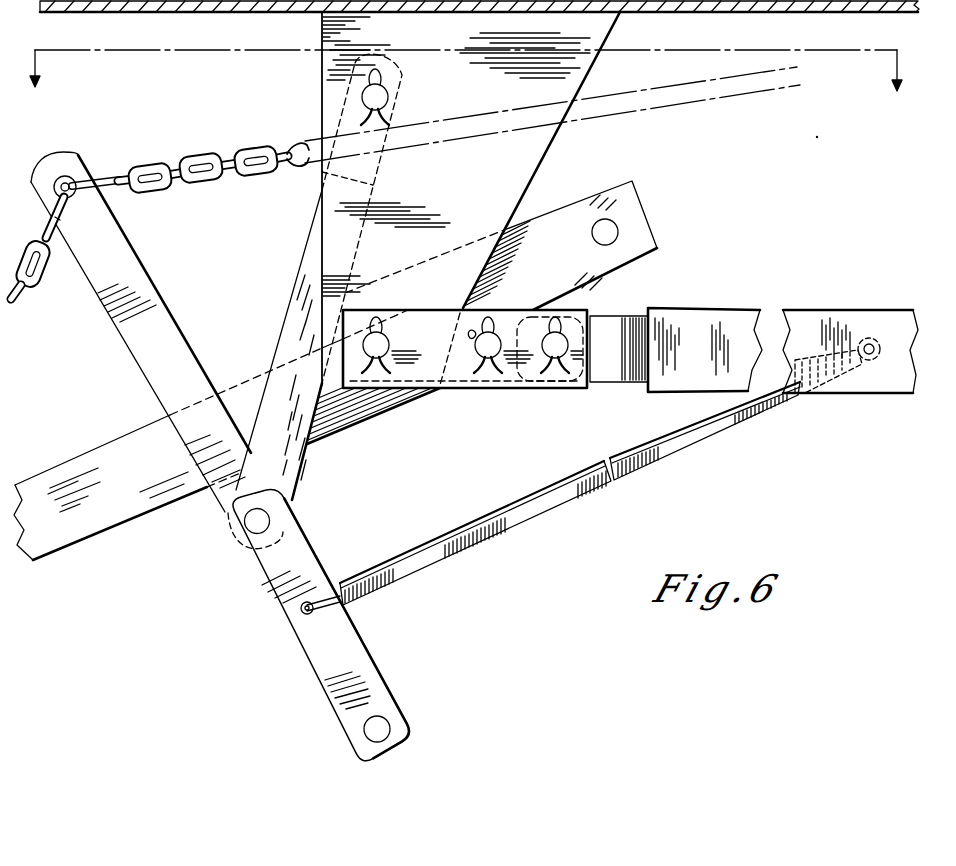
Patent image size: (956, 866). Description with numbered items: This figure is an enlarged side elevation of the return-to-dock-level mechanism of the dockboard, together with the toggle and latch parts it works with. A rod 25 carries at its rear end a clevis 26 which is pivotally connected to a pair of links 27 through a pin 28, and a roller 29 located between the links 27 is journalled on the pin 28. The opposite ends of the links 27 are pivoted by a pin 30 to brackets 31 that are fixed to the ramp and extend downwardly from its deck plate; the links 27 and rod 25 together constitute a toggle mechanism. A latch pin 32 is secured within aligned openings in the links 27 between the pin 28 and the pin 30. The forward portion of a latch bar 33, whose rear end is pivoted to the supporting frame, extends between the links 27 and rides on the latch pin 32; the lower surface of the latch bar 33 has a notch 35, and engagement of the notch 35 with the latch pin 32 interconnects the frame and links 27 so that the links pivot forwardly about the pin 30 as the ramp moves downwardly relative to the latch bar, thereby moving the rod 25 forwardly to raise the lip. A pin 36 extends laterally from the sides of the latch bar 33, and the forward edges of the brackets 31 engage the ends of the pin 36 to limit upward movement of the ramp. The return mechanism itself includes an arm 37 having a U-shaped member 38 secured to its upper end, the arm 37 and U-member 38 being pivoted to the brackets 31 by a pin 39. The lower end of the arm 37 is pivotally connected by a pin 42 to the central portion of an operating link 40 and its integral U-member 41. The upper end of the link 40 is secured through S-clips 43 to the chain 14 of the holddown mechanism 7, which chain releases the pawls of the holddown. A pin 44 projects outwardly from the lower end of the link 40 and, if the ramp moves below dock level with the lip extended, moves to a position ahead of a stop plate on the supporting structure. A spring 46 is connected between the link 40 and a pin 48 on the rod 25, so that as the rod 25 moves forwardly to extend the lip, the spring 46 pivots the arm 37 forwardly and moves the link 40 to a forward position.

The holddown mechanism 7 is at (464, 86).
The chain 14 is at (208, 155).
The rod 25 is at (887, 386).
The clevis 26 is at (624, 316).
The links 27 is at (447, 312).
The pin 28 is at (556, 345).
The roller 29 is at (518, 382).
The pin 30 is at (380, 346).
The brackets 31 is at (528, 164).
The latch pin 32 is at (487, 350).
The latch bar 33 is at (122, 512).
The notch 35 is at (494, 310).
The pin 36 is at (616, 226).
The arm 37 is at (285, 320).
The U-shaped member 38 is at (402, 107).
The pin 39 is at (380, 92).
The operating link 40 is at (168, 388).
The U-member 41 is at (268, 572).
The pin 42 is at (257, 522).
The S-clips 43 is at (107, 178).
The pin 44 is at (380, 725).
The spring 46 is at (690, 450).
The pin 48 is at (873, 338).